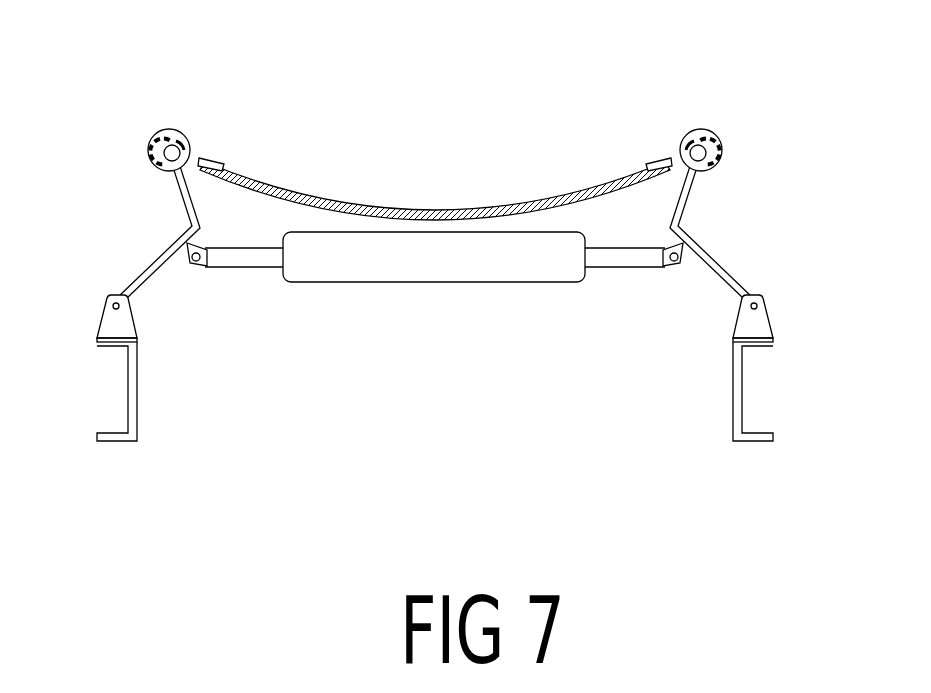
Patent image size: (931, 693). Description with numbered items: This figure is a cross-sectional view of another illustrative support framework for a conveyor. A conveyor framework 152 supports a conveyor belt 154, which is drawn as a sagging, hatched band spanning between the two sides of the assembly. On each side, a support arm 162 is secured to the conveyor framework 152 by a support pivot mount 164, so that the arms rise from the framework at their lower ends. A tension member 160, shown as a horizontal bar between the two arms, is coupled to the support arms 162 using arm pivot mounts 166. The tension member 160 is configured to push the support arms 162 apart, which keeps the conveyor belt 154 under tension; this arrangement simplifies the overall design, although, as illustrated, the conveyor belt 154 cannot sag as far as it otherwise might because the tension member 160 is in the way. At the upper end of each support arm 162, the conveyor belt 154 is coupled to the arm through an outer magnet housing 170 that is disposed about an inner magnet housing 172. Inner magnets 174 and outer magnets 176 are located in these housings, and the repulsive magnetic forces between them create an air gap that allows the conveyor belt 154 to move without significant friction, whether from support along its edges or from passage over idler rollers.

The conveyor framework 152 is at (132, 402).
The conveyor belt 154 is at (468, 212).
The tension member 160 is at (467, 270).
The support arms 162 is at (158, 263).
The support pivot mounts 164 is at (108, 322).
The arm pivot mounts 166 is at (180, 268).
The outer magnet housing 170 is at (157, 140).
The inner magnet housing 172 is at (177, 150).
The inner magnets 174 is at (160, 135).
The outer magnets 176 is at (183, 140).